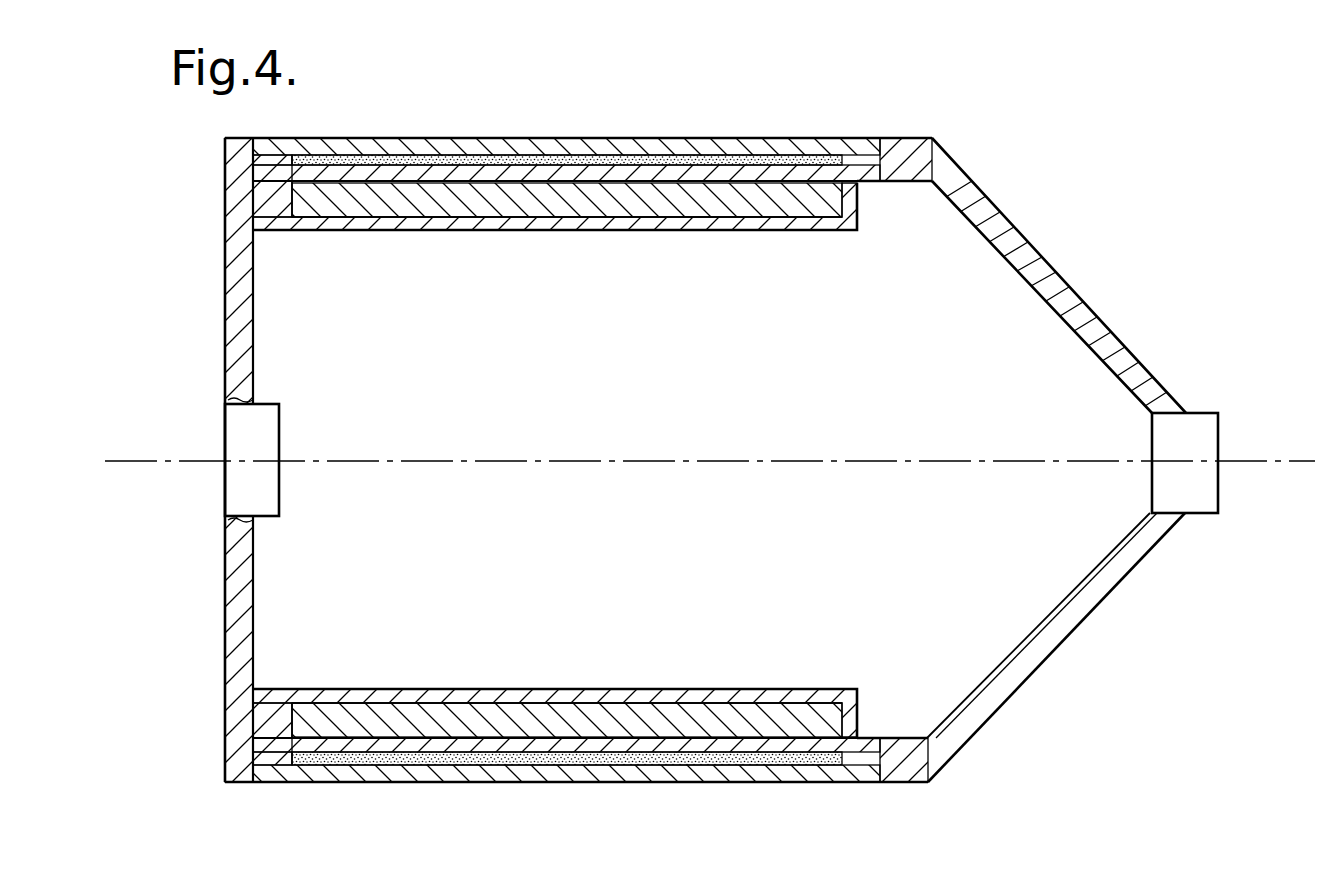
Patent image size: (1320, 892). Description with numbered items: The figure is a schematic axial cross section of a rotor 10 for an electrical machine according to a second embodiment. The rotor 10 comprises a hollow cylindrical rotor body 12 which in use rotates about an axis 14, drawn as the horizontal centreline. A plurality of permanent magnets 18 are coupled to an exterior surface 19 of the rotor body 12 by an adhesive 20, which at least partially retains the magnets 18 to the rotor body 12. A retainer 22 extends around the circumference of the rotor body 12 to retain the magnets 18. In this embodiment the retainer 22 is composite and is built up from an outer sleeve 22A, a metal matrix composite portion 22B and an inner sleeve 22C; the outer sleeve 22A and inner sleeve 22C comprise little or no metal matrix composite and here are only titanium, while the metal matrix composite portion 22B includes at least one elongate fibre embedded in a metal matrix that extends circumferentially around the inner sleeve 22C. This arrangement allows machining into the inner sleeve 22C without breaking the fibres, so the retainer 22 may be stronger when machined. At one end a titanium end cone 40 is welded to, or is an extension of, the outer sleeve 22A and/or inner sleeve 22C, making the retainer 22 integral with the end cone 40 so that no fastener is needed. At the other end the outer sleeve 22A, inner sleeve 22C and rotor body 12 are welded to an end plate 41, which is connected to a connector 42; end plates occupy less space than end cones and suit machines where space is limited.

The rotor 10 is at (397, 112).
The rotor body 12 is at (236, 207).
The axis 14 is at (1279, 466).
The magnets 18 is at (652, 210).
The exterior surface 19 is at (416, 217).
The adhesive 20 is at (768, 222).
The retainer 22 is at (591, 477).
The outer sleeve 22A is at (632, 146).
The metal matrix composite portion 22B is at (713, 150).
The inner sleeve 22C is at (524, 150).
The end cone 40 is at (1037, 252).
The end plate 41 is at (233, 560).
The connector 42 is at (233, 434).